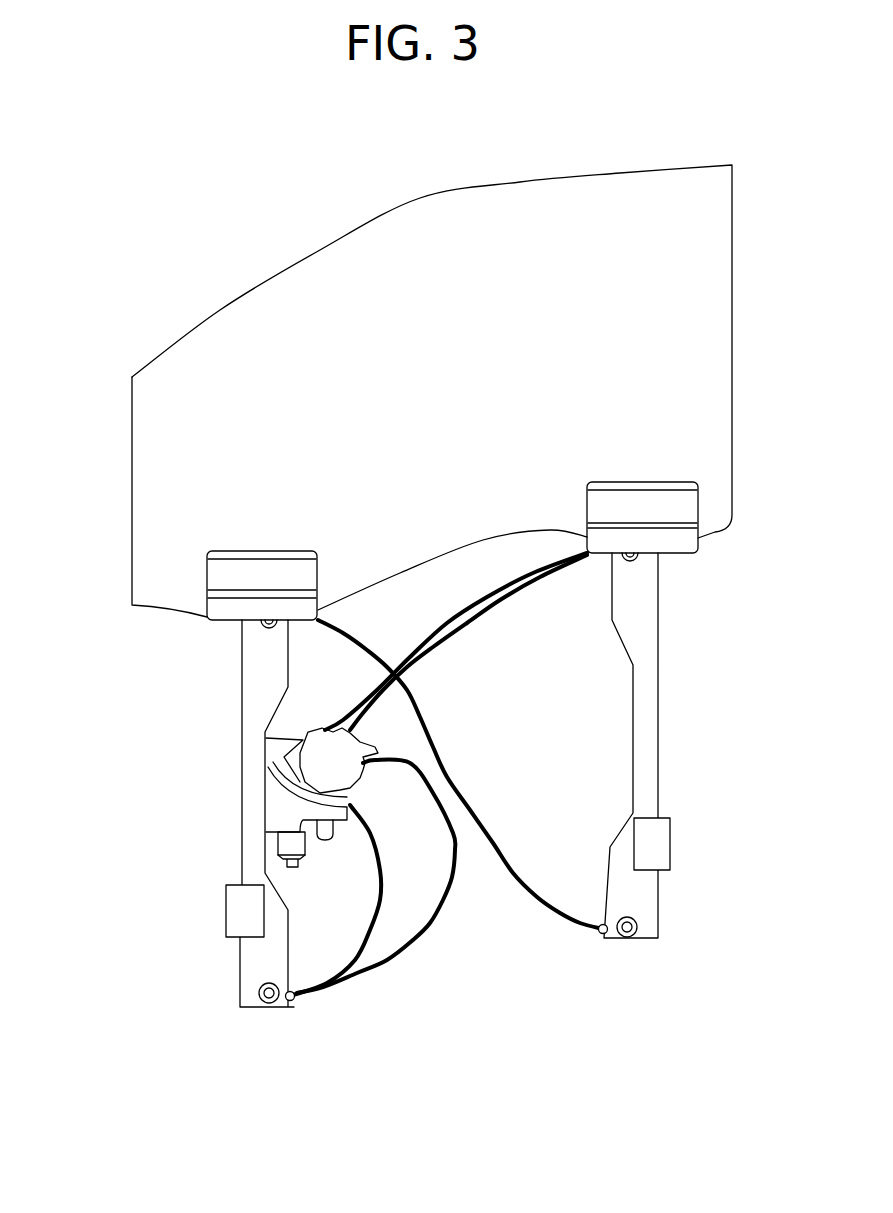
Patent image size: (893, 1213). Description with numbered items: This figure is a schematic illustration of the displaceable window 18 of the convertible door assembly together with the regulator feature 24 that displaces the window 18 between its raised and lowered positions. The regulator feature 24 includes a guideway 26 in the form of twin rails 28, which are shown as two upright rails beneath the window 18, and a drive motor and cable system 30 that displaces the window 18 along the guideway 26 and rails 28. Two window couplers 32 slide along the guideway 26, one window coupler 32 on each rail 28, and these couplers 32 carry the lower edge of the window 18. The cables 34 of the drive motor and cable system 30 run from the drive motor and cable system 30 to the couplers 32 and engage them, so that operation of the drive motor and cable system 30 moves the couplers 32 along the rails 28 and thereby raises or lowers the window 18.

The window 18 is at (392, 263).
The regulator feature 24 is at (193, 888).
The guideway 26 is at (595, 945).
The twin rails 28 is at (253, 682).
The drive motor and cable system 30 is at (355, 738).
The window couplers 32 is at (218, 580).
The cables 34 is at (518, 588).